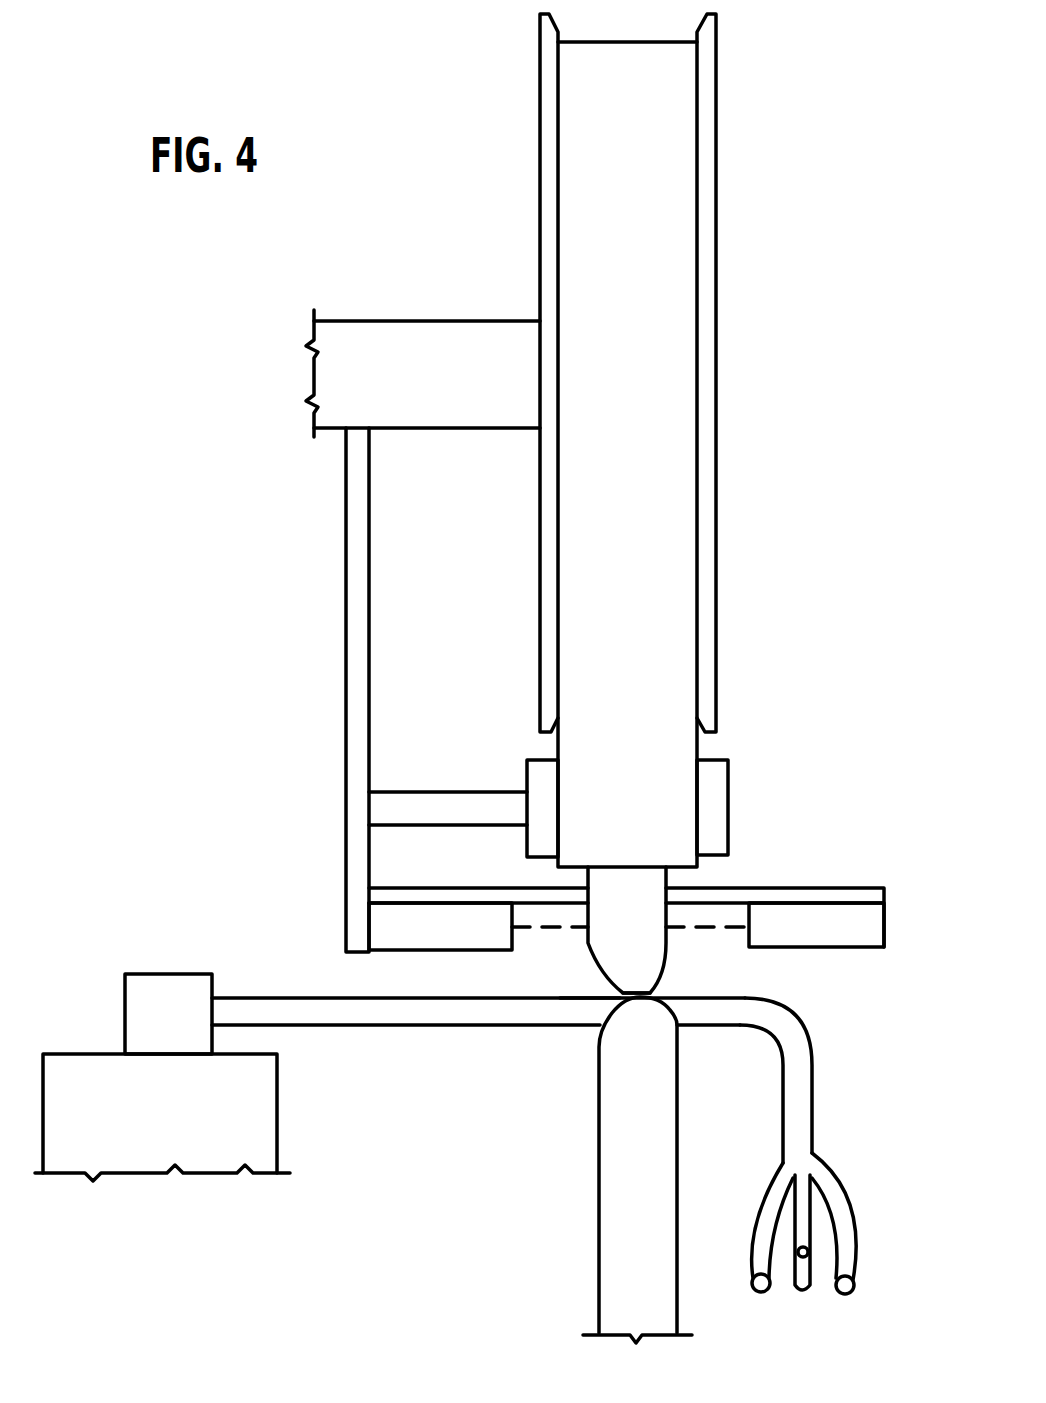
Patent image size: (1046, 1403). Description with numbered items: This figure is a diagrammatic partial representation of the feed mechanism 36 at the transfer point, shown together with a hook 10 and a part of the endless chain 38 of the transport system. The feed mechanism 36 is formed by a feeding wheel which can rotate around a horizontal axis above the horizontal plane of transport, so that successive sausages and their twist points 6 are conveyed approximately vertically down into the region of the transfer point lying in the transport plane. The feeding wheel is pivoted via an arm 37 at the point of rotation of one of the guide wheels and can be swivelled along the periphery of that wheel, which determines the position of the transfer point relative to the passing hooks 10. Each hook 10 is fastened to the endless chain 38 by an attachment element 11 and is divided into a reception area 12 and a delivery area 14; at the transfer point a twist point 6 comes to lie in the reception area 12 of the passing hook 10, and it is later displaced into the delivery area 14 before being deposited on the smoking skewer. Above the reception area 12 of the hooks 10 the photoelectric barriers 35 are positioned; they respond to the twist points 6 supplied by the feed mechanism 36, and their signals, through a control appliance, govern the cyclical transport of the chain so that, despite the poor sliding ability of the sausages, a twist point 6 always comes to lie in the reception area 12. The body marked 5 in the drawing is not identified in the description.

The bag neck / container tube 5 is at (639, 964).
The twist point 6 is at (656, 993).
The hook 10 is at (477, 1040).
The attachment element 11 is at (160, 1008).
The reception area 12 is at (573, 1013).
The delivery area 14 is at (849, 1172).
The photoelectric barrier 35 is at (413, 924).
The feed mechanism 36 is at (762, 514).
The arm 37 is at (394, 342).
The endless chain 38 is at (175, 1131).